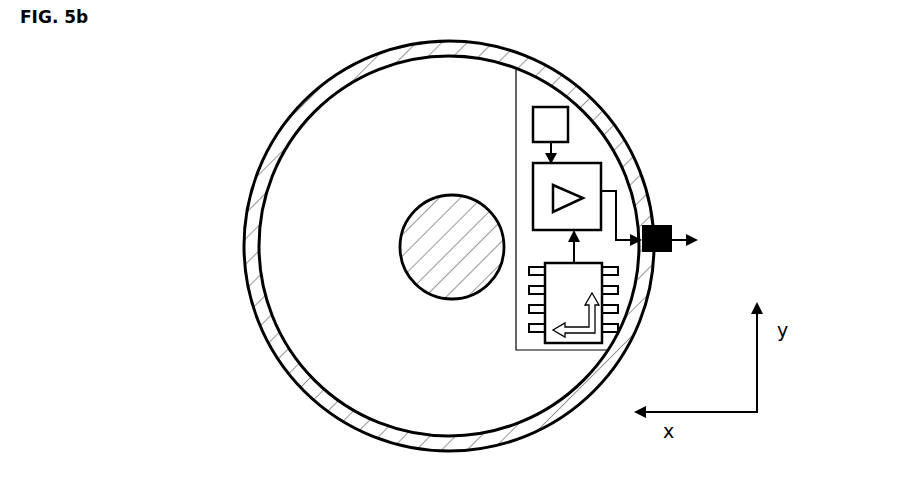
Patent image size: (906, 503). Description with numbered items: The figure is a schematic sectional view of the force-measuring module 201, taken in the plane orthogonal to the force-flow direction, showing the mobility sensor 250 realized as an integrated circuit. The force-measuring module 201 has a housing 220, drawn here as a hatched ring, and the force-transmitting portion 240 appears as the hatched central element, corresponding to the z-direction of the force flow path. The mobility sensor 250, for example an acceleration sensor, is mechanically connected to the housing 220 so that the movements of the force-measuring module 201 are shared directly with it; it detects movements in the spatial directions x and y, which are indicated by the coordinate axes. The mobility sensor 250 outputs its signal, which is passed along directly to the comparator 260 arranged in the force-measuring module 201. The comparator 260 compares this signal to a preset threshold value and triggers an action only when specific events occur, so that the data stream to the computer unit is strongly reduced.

The force-measuring module 201 is at (198, 309).
The housing 220 is at (243, 228).
The force-transmitting portion 240 is at (441, 237).
The mobility sensor 250 is at (584, 262).
The comparator 260 is at (602, 168).